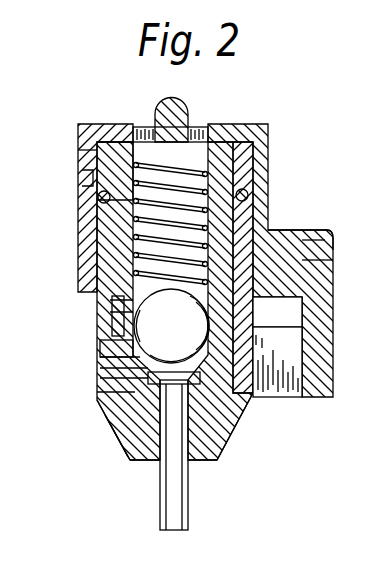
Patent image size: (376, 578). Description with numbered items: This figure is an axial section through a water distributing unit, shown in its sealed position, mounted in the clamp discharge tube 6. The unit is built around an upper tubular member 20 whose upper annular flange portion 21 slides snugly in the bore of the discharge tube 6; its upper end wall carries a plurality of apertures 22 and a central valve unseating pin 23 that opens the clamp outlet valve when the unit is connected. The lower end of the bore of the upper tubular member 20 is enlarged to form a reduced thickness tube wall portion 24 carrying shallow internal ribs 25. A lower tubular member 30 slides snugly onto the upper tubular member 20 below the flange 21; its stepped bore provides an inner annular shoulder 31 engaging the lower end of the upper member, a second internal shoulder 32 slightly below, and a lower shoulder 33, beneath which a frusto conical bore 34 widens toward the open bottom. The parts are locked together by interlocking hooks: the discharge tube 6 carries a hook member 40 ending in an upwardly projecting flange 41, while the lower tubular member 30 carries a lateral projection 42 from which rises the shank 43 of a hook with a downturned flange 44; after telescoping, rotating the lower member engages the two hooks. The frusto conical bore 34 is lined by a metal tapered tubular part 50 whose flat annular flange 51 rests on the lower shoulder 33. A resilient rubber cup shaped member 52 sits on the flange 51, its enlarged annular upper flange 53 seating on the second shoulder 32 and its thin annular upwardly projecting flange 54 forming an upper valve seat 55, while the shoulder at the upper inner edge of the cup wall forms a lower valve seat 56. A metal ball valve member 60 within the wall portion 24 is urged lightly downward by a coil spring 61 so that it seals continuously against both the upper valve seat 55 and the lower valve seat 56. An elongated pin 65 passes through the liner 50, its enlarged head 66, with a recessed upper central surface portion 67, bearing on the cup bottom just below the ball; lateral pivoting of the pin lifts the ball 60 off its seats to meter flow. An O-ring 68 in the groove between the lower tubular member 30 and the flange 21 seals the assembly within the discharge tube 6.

The clamp discharge tube 6 is at (266, 146).
The upper tubular member 20 is at (98, 228).
The upper annular flange portion 21 is at (105, 167).
The apertures 22 is at (148, 128).
The valve unseating pin 23 is at (176, 115).
The reduced thickness tube wall portion 24 is at (113, 299).
The longitudinal internally projecting ribs 25 is at (113, 311).
The lower tubular member 30 is at (103, 245).
The inner annular shoulder 31 is at (100, 357).
The second internal shoulder 32 is at (100, 378).
The lower shoulder 33 is at (110, 418).
The frusto conical bore 34 is at (220, 432).
The hook member 40 is at (297, 301).
The upwardly projecting flange 41 is at (330, 234).
The lateral projection 42 is at (308, 305).
The shank 43 is at (328, 268).
The downturned flange 44 is at (280, 250).
The metal tapered tubular part 50 is at (135, 465).
The annular flange 51 is at (122, 440).
The cup shaped member 52 is at (97, 399).
The enlarged annular upper flange 53 is at (100, 366).
The thin annular upwardly projecting flange 54 is at (100, 342).
The upper valve seat 55 is at (135, 322).
The lower valve seat 56 is at (205, 345).
The valve member 60 is at (195, 330).
The coil spring 61 is at (88, 178).
The elongated pin 65 is at (186, 483).
The enlarged head 66 is at (222, 367).
The recessed upper central surface portion 67 is at (149, 326).
The O-ring 68 is at (100, 198).